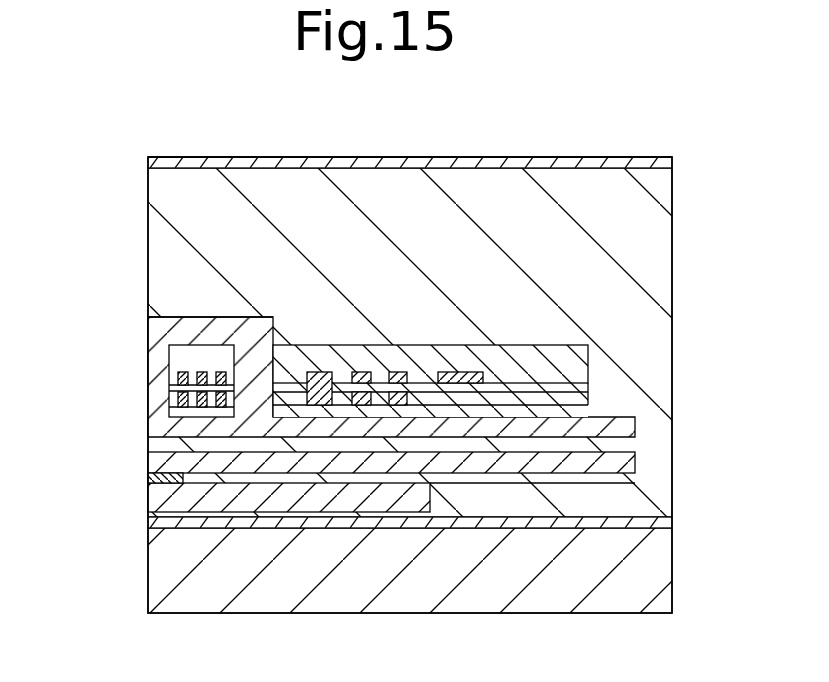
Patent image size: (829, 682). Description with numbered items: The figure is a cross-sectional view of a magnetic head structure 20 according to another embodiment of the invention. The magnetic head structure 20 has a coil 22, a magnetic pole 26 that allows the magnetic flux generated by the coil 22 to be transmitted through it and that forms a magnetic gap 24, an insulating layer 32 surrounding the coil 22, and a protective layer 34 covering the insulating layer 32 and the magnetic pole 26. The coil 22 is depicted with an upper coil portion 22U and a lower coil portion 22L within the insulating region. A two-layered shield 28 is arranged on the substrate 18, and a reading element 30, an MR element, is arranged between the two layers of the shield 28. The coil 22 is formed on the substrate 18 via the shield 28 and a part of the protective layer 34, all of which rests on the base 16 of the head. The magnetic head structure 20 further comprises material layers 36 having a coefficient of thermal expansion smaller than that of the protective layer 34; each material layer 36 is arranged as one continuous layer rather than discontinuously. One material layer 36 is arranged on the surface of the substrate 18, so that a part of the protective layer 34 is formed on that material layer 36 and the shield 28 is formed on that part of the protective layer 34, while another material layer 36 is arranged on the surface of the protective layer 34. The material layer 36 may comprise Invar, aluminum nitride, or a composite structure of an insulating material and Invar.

The substrate 16 is at (148, 570).
The substrate 18 is at (388, 597).
The magnetic head structure 20 is at (412, 148).
The coil 22 is at (68, 362).
The upper coil layer 22U is at (172, 379).
The lower coil layer 22L is at (172, 394).
The magnetic gap 24 is at (157, 353).
The magnetic pole 26 is at (158, 326).
The shield 28 is at (160, 462).
The reading element 30 is at (158, 480).
The insulating layer 32 is at (573, 365).
The protective layer 34 is at (637, 293).
The material layer 36 is at (672, 161).